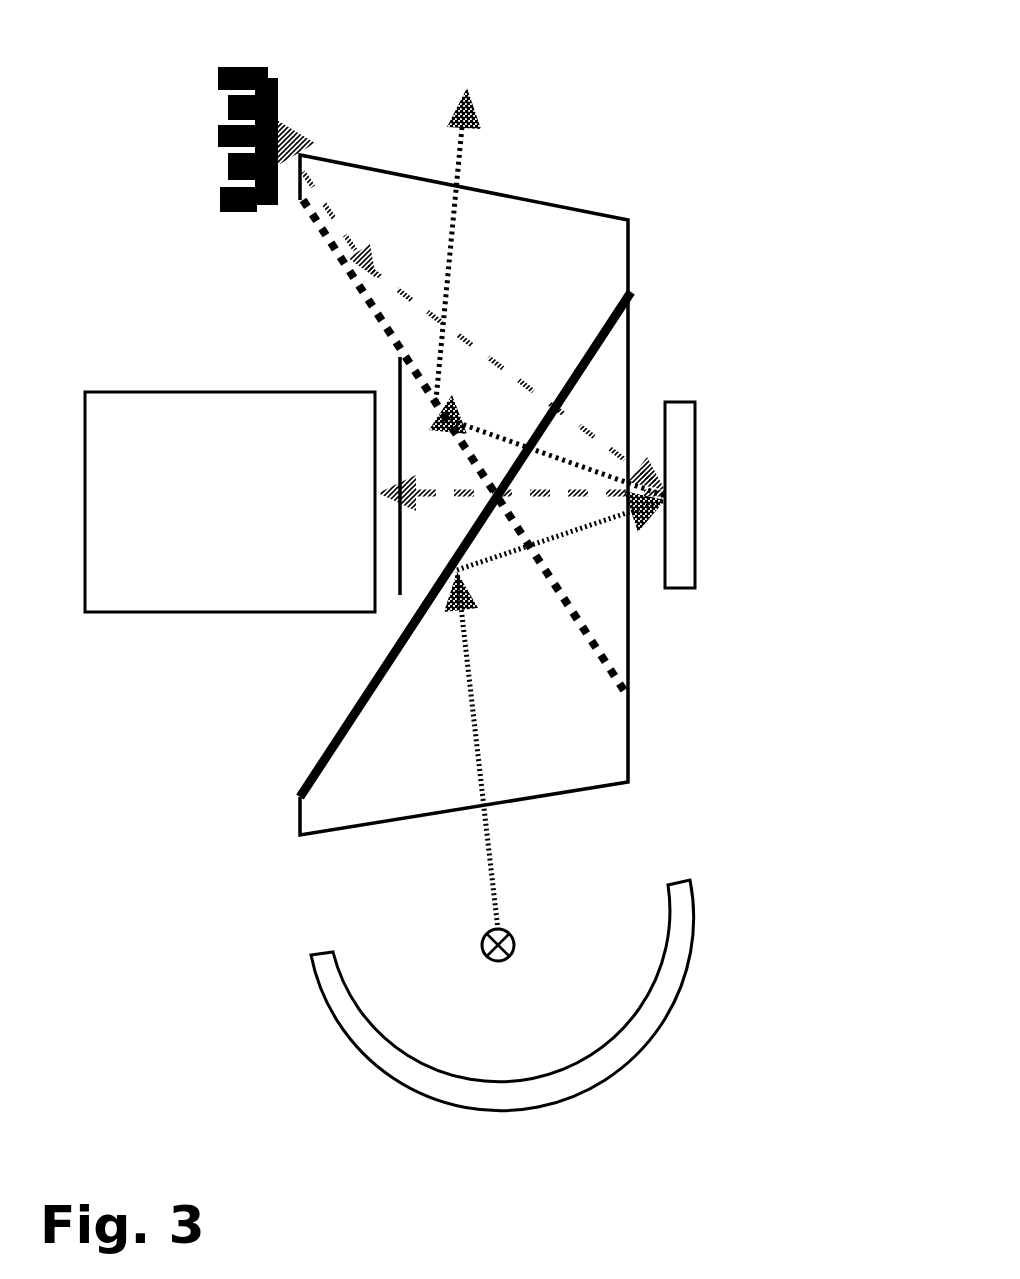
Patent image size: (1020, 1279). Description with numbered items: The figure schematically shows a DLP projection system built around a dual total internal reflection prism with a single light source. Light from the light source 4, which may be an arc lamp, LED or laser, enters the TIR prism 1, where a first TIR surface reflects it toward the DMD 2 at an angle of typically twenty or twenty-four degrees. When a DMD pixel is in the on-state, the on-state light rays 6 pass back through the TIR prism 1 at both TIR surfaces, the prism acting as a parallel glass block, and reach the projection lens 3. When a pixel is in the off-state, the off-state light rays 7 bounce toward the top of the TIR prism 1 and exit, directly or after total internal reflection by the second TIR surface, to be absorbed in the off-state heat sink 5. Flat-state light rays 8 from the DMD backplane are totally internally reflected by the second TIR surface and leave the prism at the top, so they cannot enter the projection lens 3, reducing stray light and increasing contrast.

The TIR prism 1 is at (642, 648).
The DMD 2 is at (702, 535).
The projection lens 3 is at (258, 630).
The light source 4 is at (667, 1017).
The off-state heat sink 5 is at (203, 120).
The on-state light rays 6 is at (373, 490).
The off-state light rays 7 is at (290, 120).
The flat-state light rays 8 is at (472, 108).